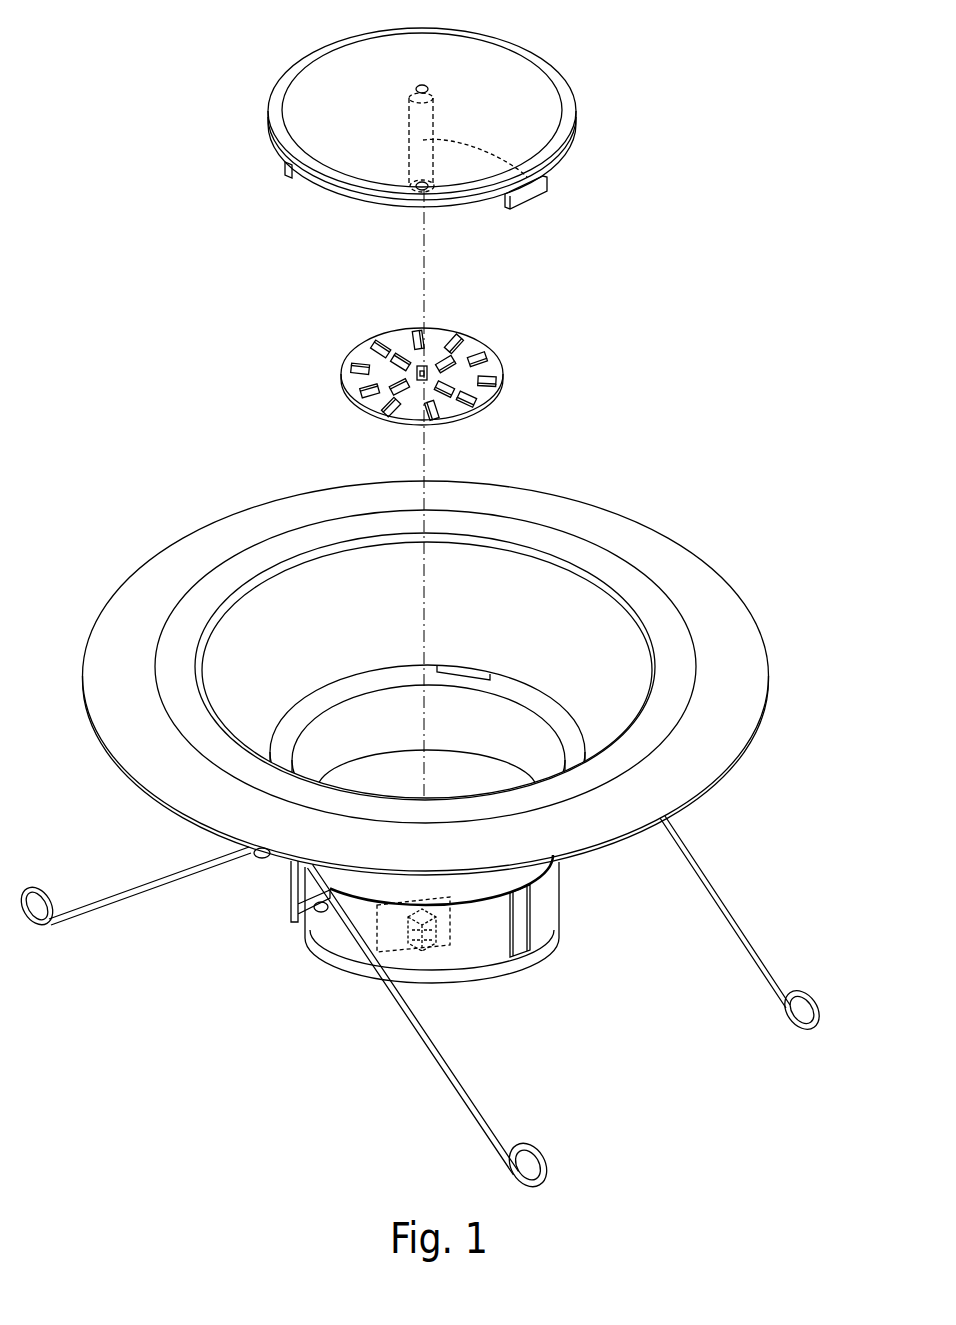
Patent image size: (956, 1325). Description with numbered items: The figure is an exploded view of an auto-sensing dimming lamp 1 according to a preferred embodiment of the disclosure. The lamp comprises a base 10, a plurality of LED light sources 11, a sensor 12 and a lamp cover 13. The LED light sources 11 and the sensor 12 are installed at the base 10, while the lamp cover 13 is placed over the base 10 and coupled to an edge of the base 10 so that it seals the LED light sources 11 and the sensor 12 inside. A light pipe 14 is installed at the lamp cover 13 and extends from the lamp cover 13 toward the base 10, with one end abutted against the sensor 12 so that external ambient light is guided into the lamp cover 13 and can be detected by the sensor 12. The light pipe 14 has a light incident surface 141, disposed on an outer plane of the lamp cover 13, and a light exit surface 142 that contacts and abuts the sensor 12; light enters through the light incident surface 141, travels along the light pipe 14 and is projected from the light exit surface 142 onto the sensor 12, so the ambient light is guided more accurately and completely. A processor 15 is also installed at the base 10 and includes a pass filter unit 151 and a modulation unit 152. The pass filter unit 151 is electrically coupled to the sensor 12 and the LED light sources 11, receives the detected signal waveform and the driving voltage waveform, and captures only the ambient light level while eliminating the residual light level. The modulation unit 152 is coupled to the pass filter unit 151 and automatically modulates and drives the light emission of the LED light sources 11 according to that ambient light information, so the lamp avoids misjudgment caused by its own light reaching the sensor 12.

The auto-sensing dimming lamp 1 is at (128, 72).
The base 10 is at (545, 892).
The LED light sources 11 is at (502, 375).
The sensor 12 is at (430, 372).
The lamp cover 13 is at (533, 103).
The light pipe 14 is at (548, 180).
The light incident surface 141 is at (428, 88).
The light exit surface 142 is at (447, 207).
The processor 15 is at (463, 980).
The pass filter unit 151 is at (490, 968).
The modulation unit 152 is at (385, 965).